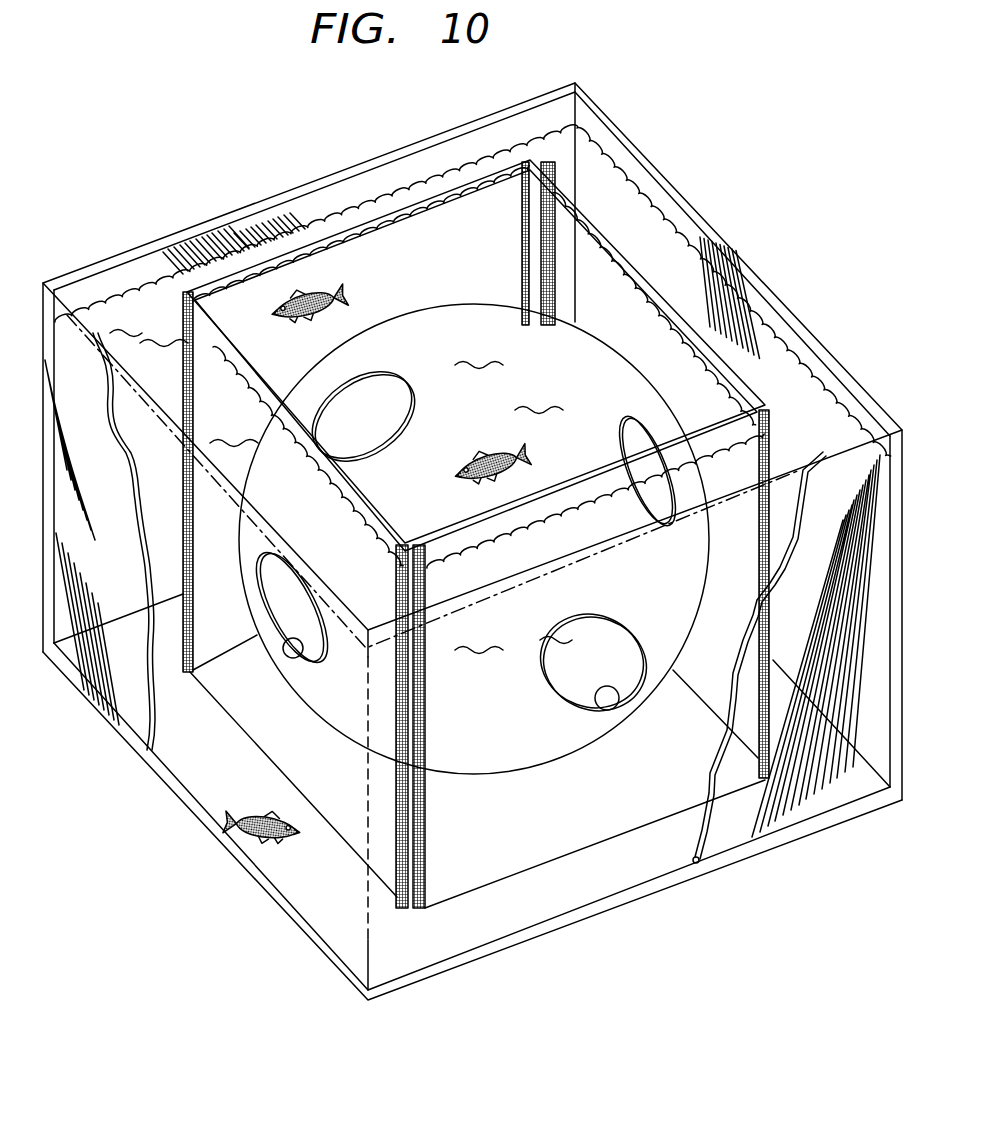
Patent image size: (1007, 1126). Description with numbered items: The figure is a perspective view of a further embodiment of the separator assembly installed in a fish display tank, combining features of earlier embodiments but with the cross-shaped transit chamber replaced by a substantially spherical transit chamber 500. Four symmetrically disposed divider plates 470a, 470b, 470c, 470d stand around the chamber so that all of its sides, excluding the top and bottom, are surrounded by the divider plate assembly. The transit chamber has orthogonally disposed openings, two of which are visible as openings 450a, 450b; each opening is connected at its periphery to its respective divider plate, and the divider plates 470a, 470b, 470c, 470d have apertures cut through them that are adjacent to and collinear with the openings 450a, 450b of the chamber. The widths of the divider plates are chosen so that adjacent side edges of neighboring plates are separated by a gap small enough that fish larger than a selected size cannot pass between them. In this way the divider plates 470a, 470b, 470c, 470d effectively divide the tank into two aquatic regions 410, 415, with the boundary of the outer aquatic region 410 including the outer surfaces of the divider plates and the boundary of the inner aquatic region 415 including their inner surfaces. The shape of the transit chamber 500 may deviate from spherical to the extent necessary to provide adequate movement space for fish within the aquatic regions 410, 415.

The aquatic region 410 is at (127, 278).
The aquatic region 415 is at (465, 205).
The substantially spherical transit chamber 500 is at (415, 322).
The opening 450a is at (283, 652).
The opening 450b is at (616, 706).
The divider plate 470a is at (262, 738).
The divider plate 470b is at (578, 843).
The divider plate 470c is at (633, 253).
The divider plate 470d is at (318, 236).